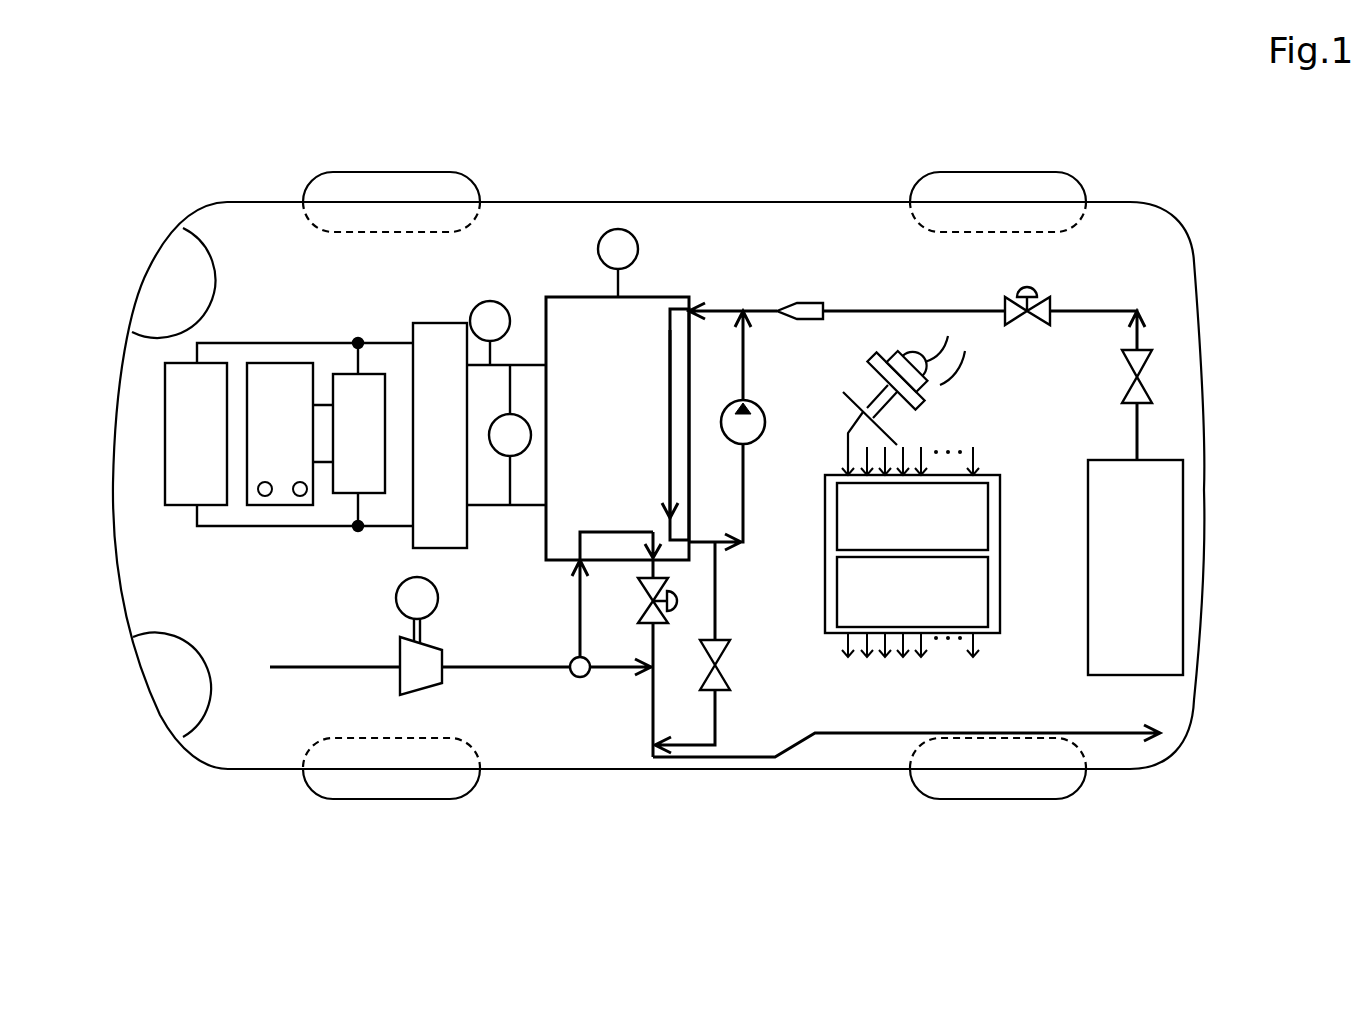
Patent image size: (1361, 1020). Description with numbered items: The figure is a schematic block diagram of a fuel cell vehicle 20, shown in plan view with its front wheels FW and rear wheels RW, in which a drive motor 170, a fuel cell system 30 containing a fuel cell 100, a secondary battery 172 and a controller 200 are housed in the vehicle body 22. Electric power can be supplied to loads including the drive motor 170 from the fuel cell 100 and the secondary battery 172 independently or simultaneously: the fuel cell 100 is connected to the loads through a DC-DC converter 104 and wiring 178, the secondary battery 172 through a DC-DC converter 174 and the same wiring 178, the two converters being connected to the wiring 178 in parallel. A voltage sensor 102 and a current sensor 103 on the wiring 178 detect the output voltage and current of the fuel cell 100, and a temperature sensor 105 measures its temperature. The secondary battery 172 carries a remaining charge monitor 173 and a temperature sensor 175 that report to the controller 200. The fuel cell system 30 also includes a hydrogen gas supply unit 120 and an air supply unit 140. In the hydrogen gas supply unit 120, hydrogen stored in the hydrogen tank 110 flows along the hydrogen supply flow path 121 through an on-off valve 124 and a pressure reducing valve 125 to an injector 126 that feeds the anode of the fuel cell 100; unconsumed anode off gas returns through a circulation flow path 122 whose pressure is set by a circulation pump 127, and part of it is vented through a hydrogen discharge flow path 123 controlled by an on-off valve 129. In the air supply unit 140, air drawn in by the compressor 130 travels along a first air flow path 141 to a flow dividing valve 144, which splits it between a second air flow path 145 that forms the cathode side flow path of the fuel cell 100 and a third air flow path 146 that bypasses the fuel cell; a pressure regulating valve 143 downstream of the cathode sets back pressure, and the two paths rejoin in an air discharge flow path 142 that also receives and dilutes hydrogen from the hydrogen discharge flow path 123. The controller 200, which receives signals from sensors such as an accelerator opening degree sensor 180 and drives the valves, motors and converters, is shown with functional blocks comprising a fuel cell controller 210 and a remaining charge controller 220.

The fuel cell vehicle 20 is at (658, 474).
The vehicle body 22 is at (655, 203).
The fuel cell system 30 is at (640, 384).
The fuel cell 100 is at (690, 296).
The voltage sensor 102 is at (522, 414).
The current sensor 103 is at (486, 301).
The DC-DC converter 104 is at (446, 323).
The temperature sensor 105 is at (636, 240).
The hydrogen tank 110 is at (1147, 460).
The hydrogen gas supply unit 120 is at (952, 487).
The hydrogen supply flow path 121 is at (850, 310).
The circulation flow path 122 is at (746, 520).
The hydrogen discharge flow path 123 is at (716, 605).
The on-off valve 124 is at (1130, 390).
The pressure reducing valve 125 is at (1052, 298).
The injector 126 is at (812, 302).
The circulation pump 127 is at (745, 444).
The on-off valve 129 is at (730, 682).
The compressor 130 is at (398, 688).
The air supply unit 140 is at (671, 652).
The first air flow path 141 is at (312, 667).
The air discharge flow path 142 is at (838, 735).
The pressure regulating valve 143 is at (638, 618).
The flow dividing valve 144 is at (576, 677).
The second air flow path 145 is at (578, 607).
The third air flow path 146 is at (608, 672).
The drive motor 170 is at (206, 362).
The secondary battery 172 is at (291, 434).
The remaining charge monitor 173 is at (265, 497).
The DC-DC converter 174 is at (343, 374).
The temperature sensor 175 is at (300, 497).
The wiring 178 is at (218, 528).
The accelerator opening degree sensor 180 is at (873, 358).
The controller 200 is at (940, 585).
The fuel cell controller 210 is at (1000, 513).
The remaining charge controller 220 is at (1000, 590).
The front wheel FW is at (447, 172).
The rear wheel RW is at (1053, 172).